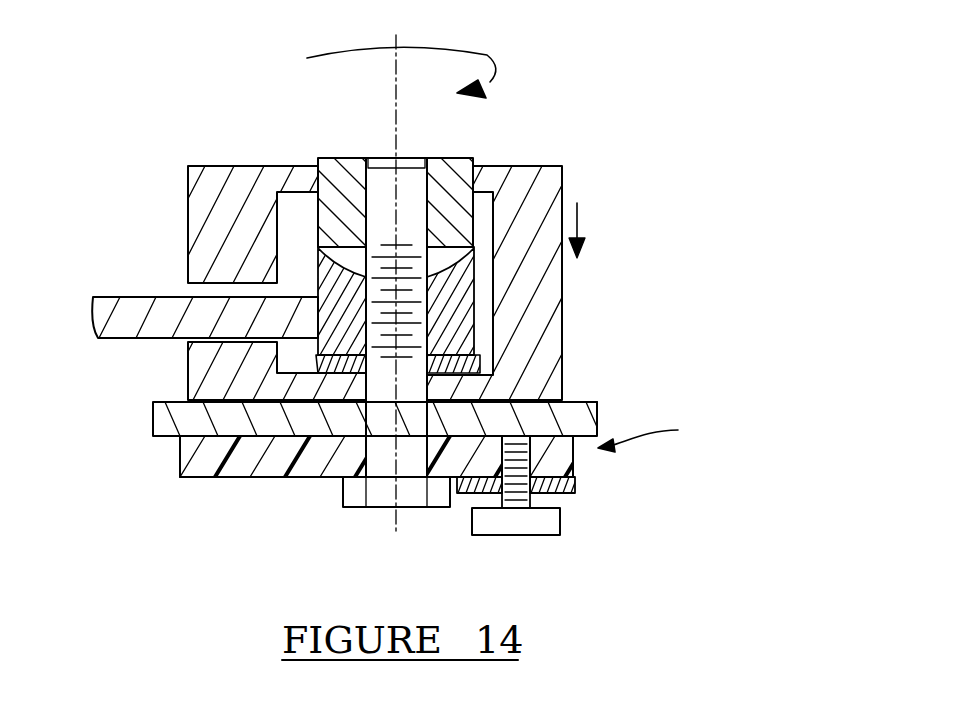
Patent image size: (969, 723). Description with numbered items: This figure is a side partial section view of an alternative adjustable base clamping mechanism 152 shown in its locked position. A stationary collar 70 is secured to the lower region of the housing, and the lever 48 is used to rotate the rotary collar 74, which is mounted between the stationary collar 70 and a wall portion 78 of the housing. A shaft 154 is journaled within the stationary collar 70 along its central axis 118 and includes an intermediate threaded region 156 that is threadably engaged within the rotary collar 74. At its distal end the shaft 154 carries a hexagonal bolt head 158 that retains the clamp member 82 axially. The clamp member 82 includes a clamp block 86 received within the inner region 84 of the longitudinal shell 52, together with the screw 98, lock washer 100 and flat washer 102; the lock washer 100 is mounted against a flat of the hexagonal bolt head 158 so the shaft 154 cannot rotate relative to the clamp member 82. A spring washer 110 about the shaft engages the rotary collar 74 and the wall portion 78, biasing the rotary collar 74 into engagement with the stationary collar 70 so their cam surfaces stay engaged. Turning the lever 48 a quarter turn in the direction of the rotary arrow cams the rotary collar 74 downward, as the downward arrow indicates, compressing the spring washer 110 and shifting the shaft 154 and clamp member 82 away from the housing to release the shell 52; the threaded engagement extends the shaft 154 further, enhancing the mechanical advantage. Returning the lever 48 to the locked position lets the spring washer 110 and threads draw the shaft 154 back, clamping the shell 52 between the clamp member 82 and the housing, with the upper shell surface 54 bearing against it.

The lever 48 is at (110, 297).
The longitudinal shell 52 is at (152, 416).
The plate upper surface 54 is at (583, 401).
The stationary collar 70 is at (330, 158).
The rotary collar 74 is at (506, 302).
The wall portion 78 is at (332, 385).
The longitudinal clamp member 82 is at (654, 428).
The inner region 84 is at (167, 436).
The longitudinal clamp block 86 is at (178, 455).
The screw 98 is at (560, 540).
The lock washer 100 is at (558, 503).
The flat washer 102 is at (577, 485).
The spring washer 110 is at (463, 368).
The central axis 118 is at (385, 536).
The clamping mechanism 152 is at (543, 49).
The shaft 154 is at (427, 190).
The intermediate threaded region 156 is at (363, 312).
The hexagonal bolt head 158 is at (343, 490).